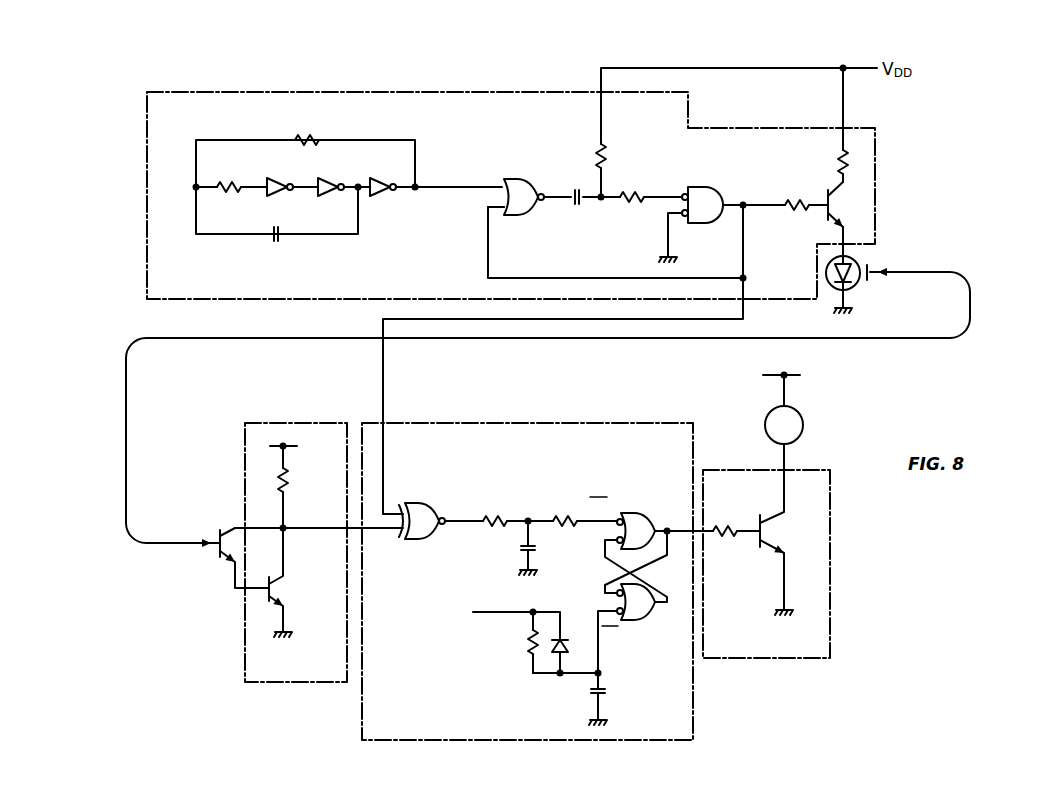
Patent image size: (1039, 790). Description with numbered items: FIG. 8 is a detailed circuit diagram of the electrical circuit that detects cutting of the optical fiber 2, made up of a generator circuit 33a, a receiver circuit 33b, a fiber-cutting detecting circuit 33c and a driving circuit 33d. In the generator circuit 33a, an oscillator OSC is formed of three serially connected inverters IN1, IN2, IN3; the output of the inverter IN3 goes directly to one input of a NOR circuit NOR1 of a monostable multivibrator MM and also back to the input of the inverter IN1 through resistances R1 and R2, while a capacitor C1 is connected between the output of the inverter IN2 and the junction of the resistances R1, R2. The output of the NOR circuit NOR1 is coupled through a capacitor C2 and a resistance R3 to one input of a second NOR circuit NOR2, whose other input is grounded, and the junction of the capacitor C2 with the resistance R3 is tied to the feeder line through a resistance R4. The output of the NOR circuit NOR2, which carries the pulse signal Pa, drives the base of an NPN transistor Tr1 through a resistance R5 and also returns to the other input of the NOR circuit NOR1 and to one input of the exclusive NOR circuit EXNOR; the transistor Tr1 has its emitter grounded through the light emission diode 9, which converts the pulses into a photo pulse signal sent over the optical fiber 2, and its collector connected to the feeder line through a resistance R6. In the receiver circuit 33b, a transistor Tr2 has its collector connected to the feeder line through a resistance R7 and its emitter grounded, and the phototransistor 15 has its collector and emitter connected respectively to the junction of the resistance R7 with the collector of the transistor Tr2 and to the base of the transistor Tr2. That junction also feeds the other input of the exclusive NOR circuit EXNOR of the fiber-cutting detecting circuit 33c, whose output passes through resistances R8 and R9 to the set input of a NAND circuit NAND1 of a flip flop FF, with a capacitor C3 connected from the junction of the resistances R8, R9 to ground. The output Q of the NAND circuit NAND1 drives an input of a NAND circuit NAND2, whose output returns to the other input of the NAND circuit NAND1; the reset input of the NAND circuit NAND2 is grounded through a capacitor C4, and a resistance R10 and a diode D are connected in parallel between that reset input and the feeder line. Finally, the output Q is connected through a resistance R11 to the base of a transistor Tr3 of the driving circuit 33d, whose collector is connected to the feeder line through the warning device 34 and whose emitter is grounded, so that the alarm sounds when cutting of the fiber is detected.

The optical fiber 2 is at (975, 300).
The light emission diode 9 is at (855, 285).
The phototransistor 15 is at (243, 526).
The warning device 34 is at (804, 422).
The generator circuit 33a is at (360, 92).
The receiver circuit 33b is at (300, 424).
The fiber-cutting detecting circuit 33c is at (554, 424).
The driving circuit 33d is at (832, 516).
The oscillator OSC is at (345, 198).
The monostable multivibrator MM is at (642, 175).
The inverter IN1 is at (280, 180).
The inverter IN2 is at (335, 180).
The inverter IN3 is at (389, 180).
The NOR circuit NOR1 is at (527, 184).
The NOR circuit NOR2 is at (697, 186).
The exclusive NOR circuit EXNOR is at (426, 508).
The NAND circuit NAND1 is at (628, 510).
The NAND circuit NAND2 is at (634, 631).
The flip flop circuit FF is at (600, 478).
The resistance R1 is at (304, 133).
The resistance R2 is at (229, 192).
The resistance R3 is at (633, 210).
The resistance R4 is at (597, 144).
The resistance R5 is at (795, 214).
The resistance R6 is at (838, 160).
The resistance R7 is at (292, 482).
The resistance R8 is at (495, 512).
The resistance R9 is at (560, 512).
The resistance R10 is at (527, 652).
The resistance R11 is at (731, 525).
The capacitor C1 is at (281, 240).
The capacitor C2 is at (573, 210).
The capacitor C3 is at (515, 547).
The capacitor C4 is at (609, 690).
The diode D is at (567, 638).
The NPN transistor Tr1 is at (822, 192).
The transistor Tr2 is at (285, 590).
The transistor Tr3 is at (756, 566).